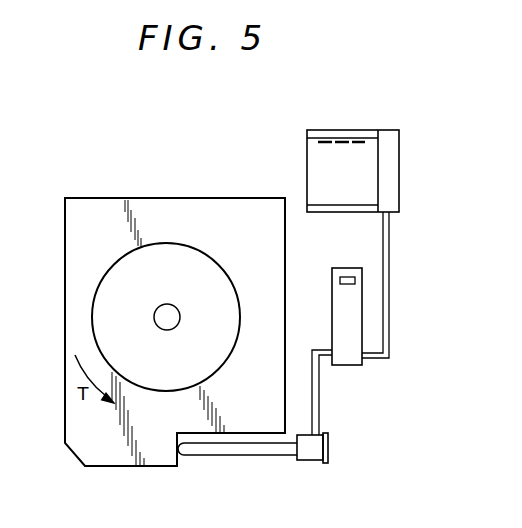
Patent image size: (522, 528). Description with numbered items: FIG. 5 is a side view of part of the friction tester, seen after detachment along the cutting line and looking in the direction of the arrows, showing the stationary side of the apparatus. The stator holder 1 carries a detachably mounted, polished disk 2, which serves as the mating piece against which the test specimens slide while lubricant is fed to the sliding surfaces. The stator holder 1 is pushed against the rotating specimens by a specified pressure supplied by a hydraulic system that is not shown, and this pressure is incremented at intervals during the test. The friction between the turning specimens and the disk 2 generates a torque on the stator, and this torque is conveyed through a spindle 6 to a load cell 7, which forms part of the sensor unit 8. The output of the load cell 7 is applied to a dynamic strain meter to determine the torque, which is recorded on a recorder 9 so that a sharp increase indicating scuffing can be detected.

The stator holder 1 is at (97, 215).
The disk 2 is at (166, 250).
The spindle 6 is at (242, 446).
The load cell 7 is at (307, 452).
The sensor unit 8 is at (349, 352).
The recorder 9 is at (348, 130).